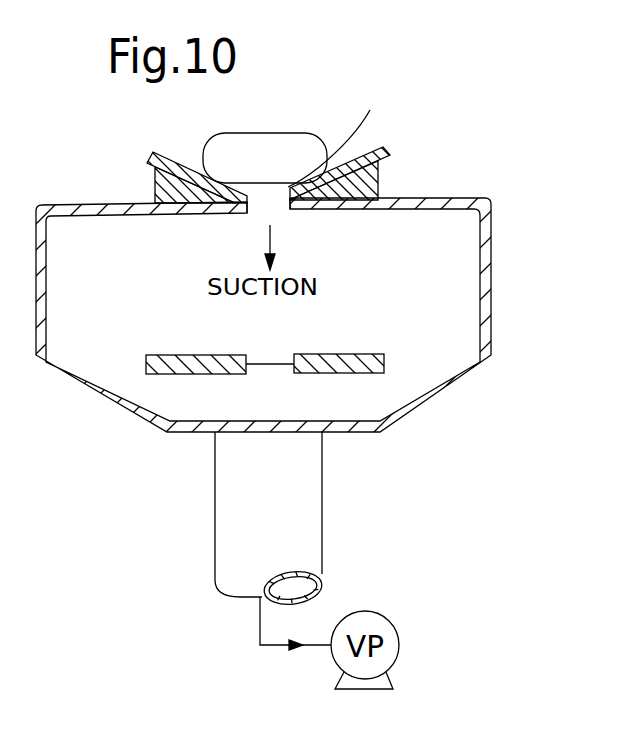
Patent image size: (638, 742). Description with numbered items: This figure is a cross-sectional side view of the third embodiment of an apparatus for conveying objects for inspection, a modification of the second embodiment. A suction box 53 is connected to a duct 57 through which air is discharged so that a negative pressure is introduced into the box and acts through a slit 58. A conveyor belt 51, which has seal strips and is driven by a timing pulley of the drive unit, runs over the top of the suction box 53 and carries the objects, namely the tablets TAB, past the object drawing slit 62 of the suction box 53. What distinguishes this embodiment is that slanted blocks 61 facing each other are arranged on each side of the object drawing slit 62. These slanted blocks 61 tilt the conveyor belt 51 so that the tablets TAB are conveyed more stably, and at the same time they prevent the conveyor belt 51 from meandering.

The conveyor belt 51 is at (386, 152).
The suction box 53 is at (493, 283).
The duct 57 is at (323, 498).
The slit 58 is at (346, 136).
The slanted block 61 is at (380, 186).
The object drawing slit 62 is at (290, 208).
The tablet TAB is at (303, 132).